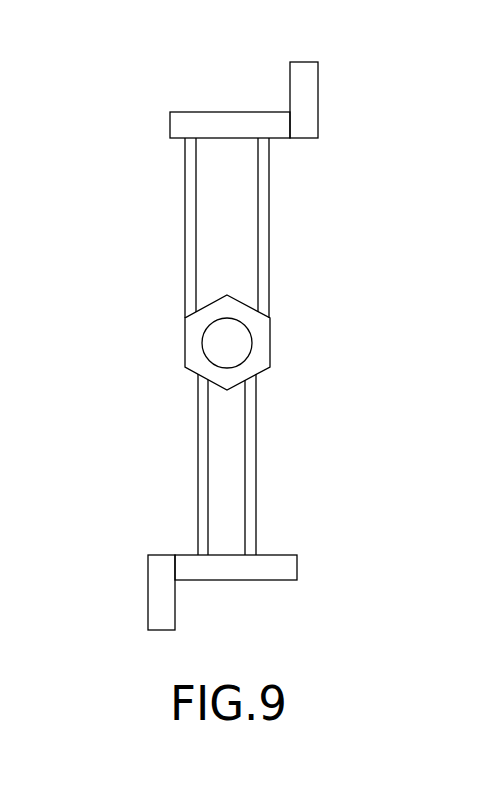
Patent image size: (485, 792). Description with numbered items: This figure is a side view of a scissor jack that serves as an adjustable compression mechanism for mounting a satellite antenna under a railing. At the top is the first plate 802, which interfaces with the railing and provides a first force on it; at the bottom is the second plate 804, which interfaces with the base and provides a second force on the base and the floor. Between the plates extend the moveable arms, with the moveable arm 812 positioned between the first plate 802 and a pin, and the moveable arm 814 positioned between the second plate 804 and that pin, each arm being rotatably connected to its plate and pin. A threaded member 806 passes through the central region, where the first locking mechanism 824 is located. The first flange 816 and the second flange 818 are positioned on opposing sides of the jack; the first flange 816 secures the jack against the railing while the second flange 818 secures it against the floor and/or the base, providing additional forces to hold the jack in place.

The first plate 802 is at (203, 112).
The second plate 804 is at (255, 580).
The threaded member 806 is at (227, 342).
The moveable arm 812 is at (269, 237).
The moveable arm 814 is at (256, 458).
The first flange 816 is at (290, 90).
The second flange 818 is at (148, 588).
The first locking mechanism 824 is at (262, 352).